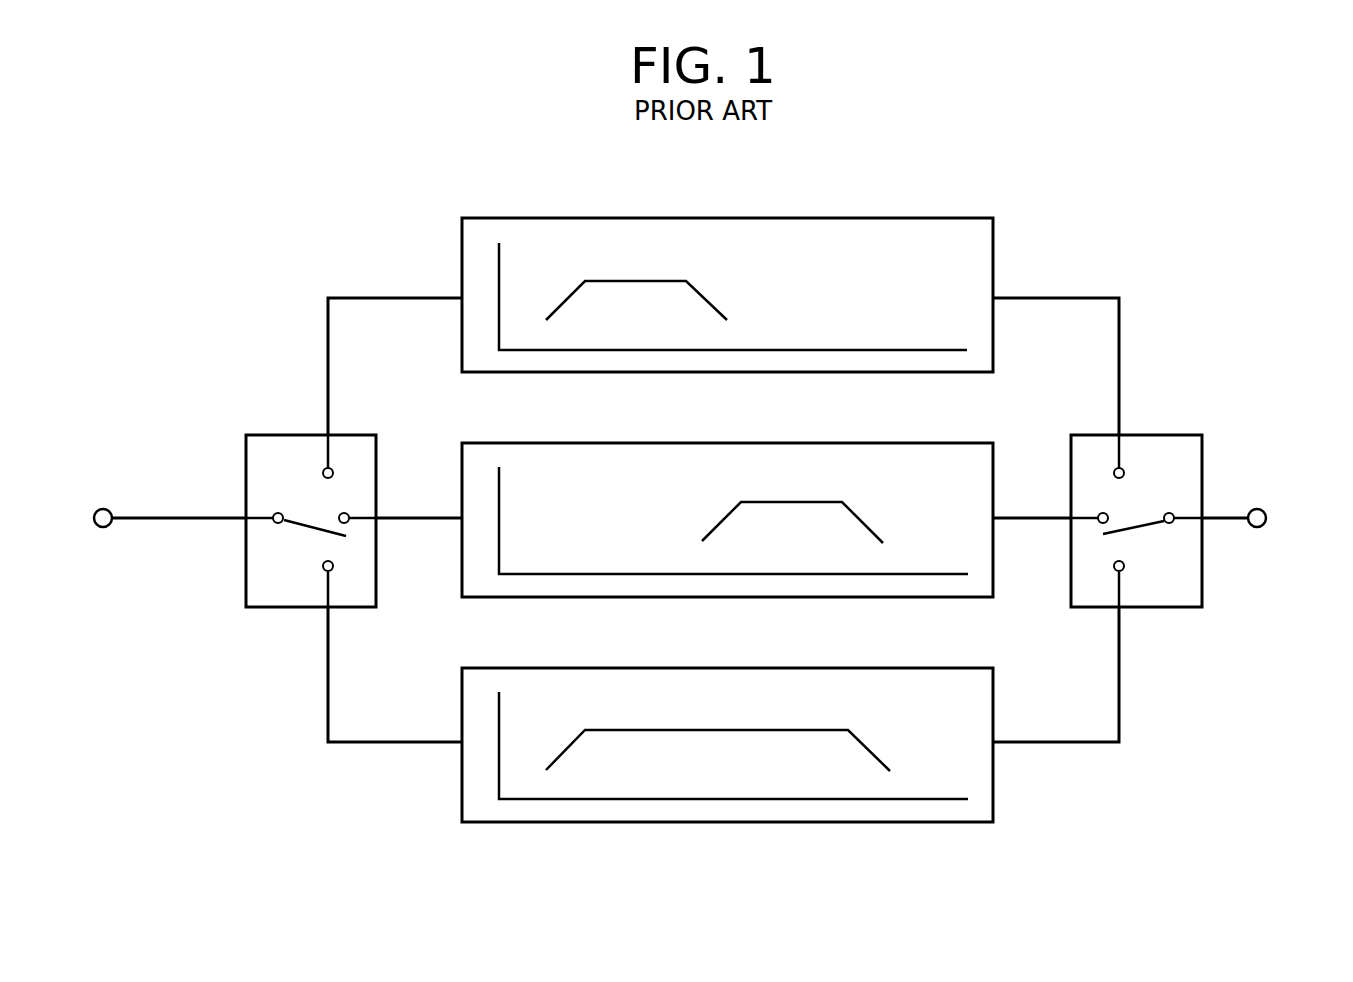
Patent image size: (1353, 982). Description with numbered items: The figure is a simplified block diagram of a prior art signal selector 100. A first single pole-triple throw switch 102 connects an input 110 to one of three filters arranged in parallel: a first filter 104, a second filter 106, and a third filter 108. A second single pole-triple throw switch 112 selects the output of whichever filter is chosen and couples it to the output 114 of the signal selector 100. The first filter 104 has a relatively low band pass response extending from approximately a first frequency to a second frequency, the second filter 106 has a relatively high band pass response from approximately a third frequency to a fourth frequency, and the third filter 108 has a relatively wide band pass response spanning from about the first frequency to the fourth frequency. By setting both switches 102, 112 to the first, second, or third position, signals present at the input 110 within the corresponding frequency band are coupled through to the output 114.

The signal selector 100 is at (232, 204).
The first single pole-triple throw switch 102 is at (290, 435).
The first filter 104 is at (462, 218).
The second filter 106 is at (492, 443).
The third filter 108 is at (488, 668).
The input 110 is at (108, 512).
The second single pole-triple throw switch 112 is at (1202, 441).
The output 114 is at (1262, 508).